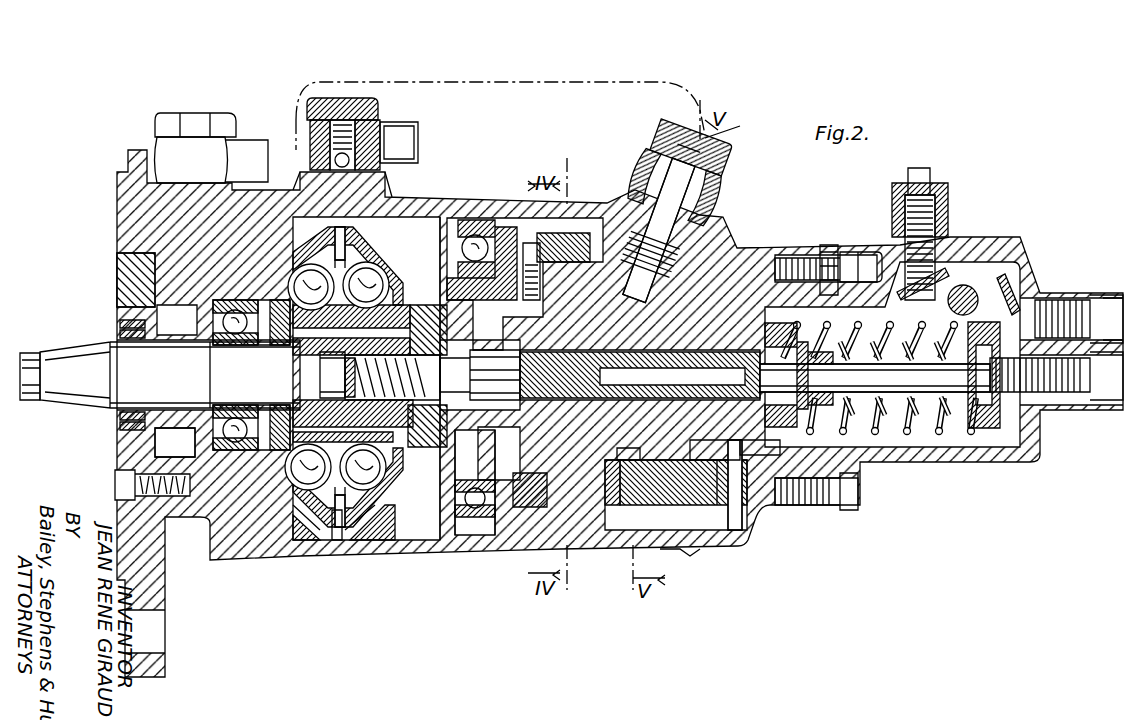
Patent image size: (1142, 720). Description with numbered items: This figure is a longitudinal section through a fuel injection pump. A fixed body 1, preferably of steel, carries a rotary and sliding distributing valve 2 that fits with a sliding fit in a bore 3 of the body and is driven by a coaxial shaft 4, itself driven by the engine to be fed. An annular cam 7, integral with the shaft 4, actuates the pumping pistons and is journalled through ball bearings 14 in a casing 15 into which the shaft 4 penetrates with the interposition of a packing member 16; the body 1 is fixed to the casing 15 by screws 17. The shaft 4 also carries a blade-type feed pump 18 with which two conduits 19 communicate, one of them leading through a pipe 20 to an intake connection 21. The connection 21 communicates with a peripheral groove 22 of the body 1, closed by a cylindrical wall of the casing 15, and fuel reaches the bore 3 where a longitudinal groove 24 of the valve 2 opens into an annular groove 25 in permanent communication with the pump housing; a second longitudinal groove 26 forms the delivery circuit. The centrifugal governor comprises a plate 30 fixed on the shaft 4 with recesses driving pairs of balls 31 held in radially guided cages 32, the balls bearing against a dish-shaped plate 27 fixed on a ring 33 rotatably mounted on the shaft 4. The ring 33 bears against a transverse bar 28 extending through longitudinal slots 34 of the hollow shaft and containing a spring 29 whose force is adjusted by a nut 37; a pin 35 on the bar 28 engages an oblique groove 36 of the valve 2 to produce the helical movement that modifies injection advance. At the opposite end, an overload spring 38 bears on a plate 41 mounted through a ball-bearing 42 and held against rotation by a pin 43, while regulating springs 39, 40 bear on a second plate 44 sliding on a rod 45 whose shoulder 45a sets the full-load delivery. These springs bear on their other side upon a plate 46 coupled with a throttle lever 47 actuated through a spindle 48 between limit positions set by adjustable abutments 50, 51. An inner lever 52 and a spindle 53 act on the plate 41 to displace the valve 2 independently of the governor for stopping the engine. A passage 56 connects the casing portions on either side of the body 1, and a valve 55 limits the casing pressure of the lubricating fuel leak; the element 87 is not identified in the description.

The fixed body 1 is at (700, 300).
The rotary and sliding valve 2 is at (481, 372).
The bore 3 is at (640, 375).
The coaxial shaft 4 is at (70, 372).
The annular cam 7 is at (567, 240).
The ball bearings 14 is at (243, 420).
The casing 15 is at (660, 548).
The packing member 16 is at (120, 330).
The screws 17 is at (527, 243).
The feed pump 18 is at (162, 441).
The conduits 19 is at (193, 150).
The pipe 20 is at (470, 82).
The intake connection 21 is at (650, 205).
The groove 22 is at (676, 495).
The longitudinal groove 24 is at (629, 489).
The annular groove 25 is at (517, 472).
The second longitudinal groove 26 is at (698, 378).
The dish-shaped plate 27 is at (380, 520).
The transverse bar 28 is at (425, 315).
The spring 29 is at (358, 377).
The plate 30 is at (305, 545).
The balls 31 is at (360, 280).
The cage 32 is at (350, 535).
The ring 33 is at (378, 495).
The longitudinal slots 34 is at (395, 480).
The pin 35 is at (445, 430).
The oblique groove 36 is at (475, 520).
The nut 37 is at (290, 378).
The overload spring 38 is at (878, 420).
The regulating spring 39 is at (945, 410).
The regulating spring 40 is at (894, 393).
The plate 41 is at (820, 505).
The ball-bearing 42 is at (772, 505).
The pin 43 is at (725, 500).
The second plate 44 is at (801, 386).
The rod 45 is at (990, 428).
The shoulder 45a is at (832, 250).
The plate 46 is at (1005, 420).
The throttle lever 47 is at (1005, 300).
The spindle 48 is at (966, 300).
The adjustable abutment 50 is at (1050, 300).
The adjustable abutment 51 is at (893, 220).
The inner lever 52 is at (755, 300).
The spindle 53 is at (760, 447).
The valve 55 is at (380, 135).
The passage 56 is at (735, 530).
The shoe pin 87 is at (336, 540).